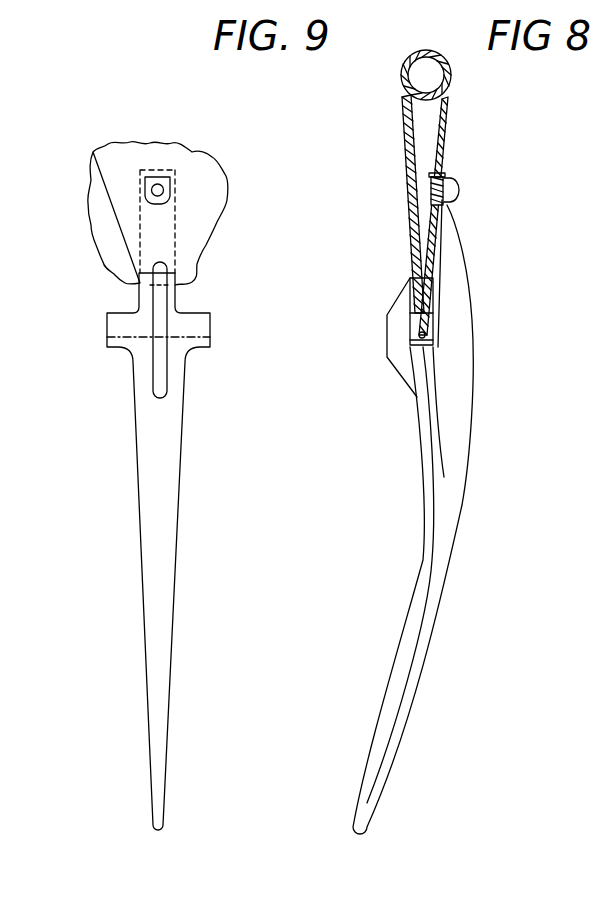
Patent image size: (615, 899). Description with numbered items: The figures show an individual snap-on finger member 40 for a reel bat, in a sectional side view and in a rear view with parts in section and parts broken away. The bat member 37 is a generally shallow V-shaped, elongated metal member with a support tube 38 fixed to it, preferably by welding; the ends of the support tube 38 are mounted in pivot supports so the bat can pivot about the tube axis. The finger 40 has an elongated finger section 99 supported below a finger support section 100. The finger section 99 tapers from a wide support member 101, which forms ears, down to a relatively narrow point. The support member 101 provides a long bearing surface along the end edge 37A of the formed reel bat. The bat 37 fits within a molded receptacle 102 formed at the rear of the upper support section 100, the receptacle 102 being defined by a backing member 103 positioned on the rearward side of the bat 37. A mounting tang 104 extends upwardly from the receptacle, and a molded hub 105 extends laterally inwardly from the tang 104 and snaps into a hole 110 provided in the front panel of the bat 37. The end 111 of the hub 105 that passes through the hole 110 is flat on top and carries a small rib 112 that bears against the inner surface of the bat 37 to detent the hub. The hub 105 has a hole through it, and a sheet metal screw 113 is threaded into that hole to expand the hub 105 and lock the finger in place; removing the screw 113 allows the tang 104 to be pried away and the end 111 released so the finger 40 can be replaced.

In FIG. 9, the bat member 37 is at (210, 187).
In FIG. 8, the bat member 37 is at (445, 115).
In FIG. 8, the end edge 37A is at (420, 325).
In FIG. 8, the support tube 38 is at (447, 60).
In FIG. 8, the finger member 40 is at (462, 505).
In FIG. 9, the finger section 99 is at (160, 695).
In FIG. 8, the finger section 99 is at (390, 752).
In FIG. 9, the finger support section 100 is at (170, 308).
In FIG. 8, the finger support section 100 is at (450, 270).
In FIG. 9, the support member 101 is at (203, 328).
In FIG. 8, the receptacle 102 is at (412, 272).
In FIG. 8, the backing member 103 is at (405, 300).
In FIG. 9, the mounting tang 104 is at (178, 253).
In FIG. 9, the hub 105 is at (162, 177).
In FIG. 8, the hub 105 is at (443, 177).
In FIG. 9, the hole 110 is at (170, 186).
In FIG. 9, the end of the hub 111 is at (143, 190).
In FIG. 8, the end of the hub 111 is at (428, 182).
In FIG. 9, the rib 112 is at (157, 205).
In FIG. 8, the rib 112 is at (430, 203).
In FIG. 8, the sheet metal screw 113 is at (460, 182).